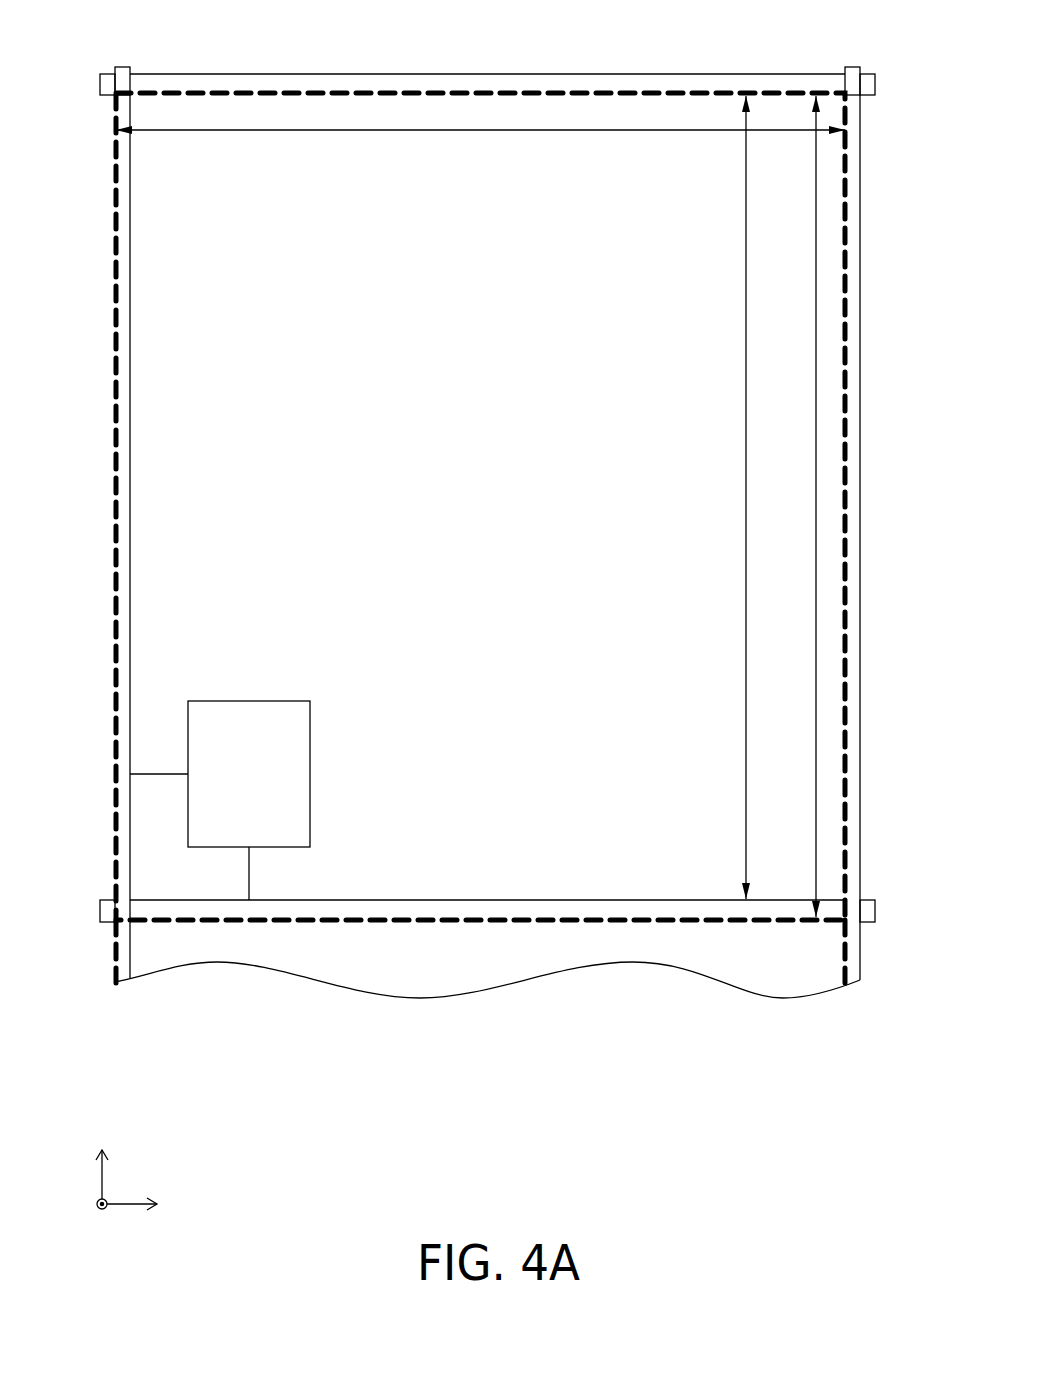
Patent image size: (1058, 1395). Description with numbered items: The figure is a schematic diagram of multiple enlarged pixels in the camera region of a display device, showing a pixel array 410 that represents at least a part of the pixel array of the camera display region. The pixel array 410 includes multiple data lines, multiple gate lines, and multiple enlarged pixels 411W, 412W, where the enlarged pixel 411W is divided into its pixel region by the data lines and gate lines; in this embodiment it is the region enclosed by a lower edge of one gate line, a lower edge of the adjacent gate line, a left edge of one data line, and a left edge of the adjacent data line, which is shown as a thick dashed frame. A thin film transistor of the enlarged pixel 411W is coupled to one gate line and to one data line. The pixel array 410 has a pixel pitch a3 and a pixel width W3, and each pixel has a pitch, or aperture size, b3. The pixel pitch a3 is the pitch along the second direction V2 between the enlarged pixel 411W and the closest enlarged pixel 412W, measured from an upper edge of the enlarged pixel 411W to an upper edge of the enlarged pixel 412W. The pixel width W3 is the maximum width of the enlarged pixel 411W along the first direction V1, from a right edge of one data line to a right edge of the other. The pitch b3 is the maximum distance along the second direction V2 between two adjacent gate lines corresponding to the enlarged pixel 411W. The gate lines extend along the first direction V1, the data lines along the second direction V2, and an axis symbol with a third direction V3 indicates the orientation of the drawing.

The enlarged pixel 411W is at (847, 470).
The enlarged pixel 412W is at (848, 953).
The pixel array 410 is at (887, 1144).
The pixel width W3 is at (480, 150).
The pitch b3 is at (725, 497).
The pixel pitch a3 is at (799, 506).
The first direction V1 is at (148, 1204).
The second direction V2 is at (101, 1157).
The third direction V3 is at (83, 1211).